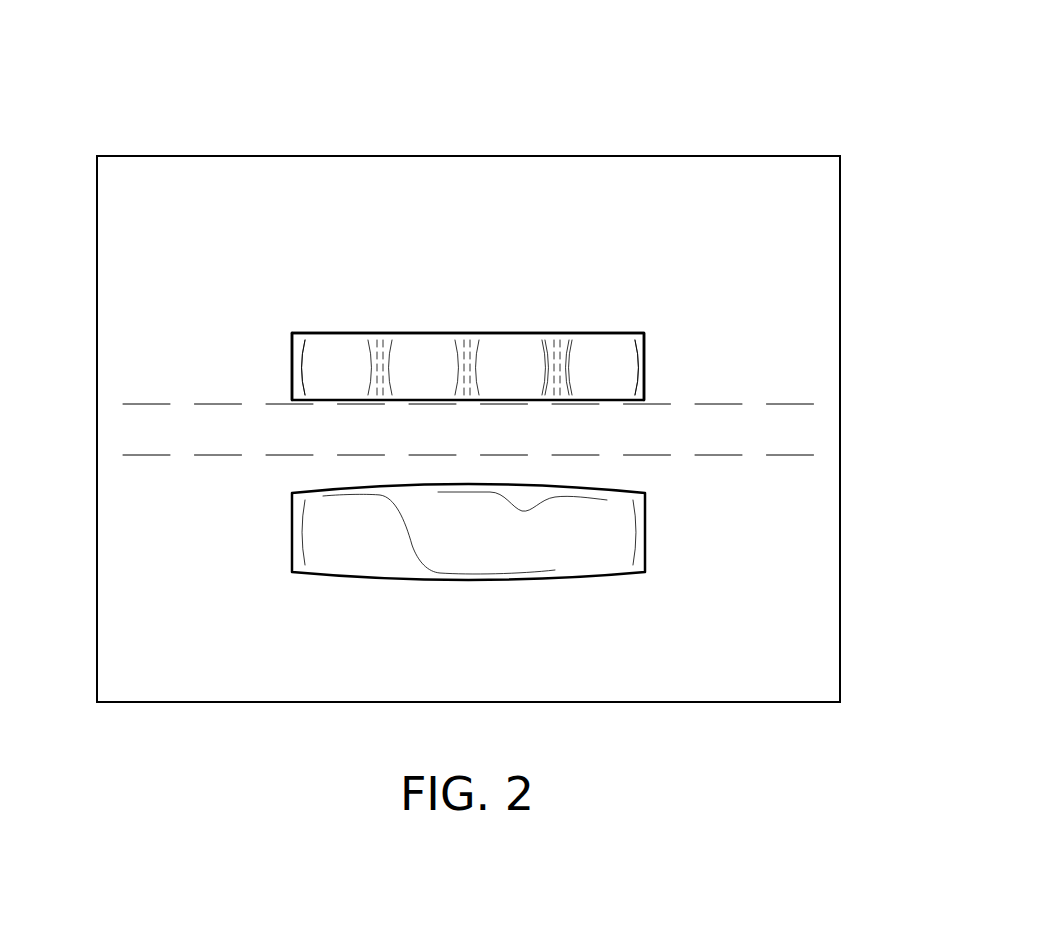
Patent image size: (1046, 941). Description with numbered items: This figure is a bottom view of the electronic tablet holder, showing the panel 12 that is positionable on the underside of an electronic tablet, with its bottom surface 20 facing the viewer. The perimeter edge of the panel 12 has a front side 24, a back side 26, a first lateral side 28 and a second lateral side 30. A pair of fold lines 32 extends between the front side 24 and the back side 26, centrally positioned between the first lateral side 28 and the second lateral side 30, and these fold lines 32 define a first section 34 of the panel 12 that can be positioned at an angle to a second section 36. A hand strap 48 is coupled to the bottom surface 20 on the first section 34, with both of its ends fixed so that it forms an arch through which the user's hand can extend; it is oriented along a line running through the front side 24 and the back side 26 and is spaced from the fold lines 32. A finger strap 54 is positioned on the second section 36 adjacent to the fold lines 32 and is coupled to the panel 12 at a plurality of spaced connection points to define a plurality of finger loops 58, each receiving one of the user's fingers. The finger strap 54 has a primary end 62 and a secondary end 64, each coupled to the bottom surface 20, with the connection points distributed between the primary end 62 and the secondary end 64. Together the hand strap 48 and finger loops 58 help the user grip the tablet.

The panel 12 is at (138, 156).
The bottom surface 20 is at (419, 194).
The front side 24 is at (840, 417).
The back side 26 is at (97, 333).
The first lateral side 28 is at (310, 702).
The second lateral side 30 is at (277, 156).
The fold lines 32 is at (730, 455).
The first section 34 is at (733, 638).
The second section 36 is at (794, 233).
The hand strap 48 is at (292, 530).
The finger strap 54 is at (625, 333).
The finger loops 58 is at (502, 362).
The primary end 62 is at (644, 336).
The secondary end 64 is at (292, 357).